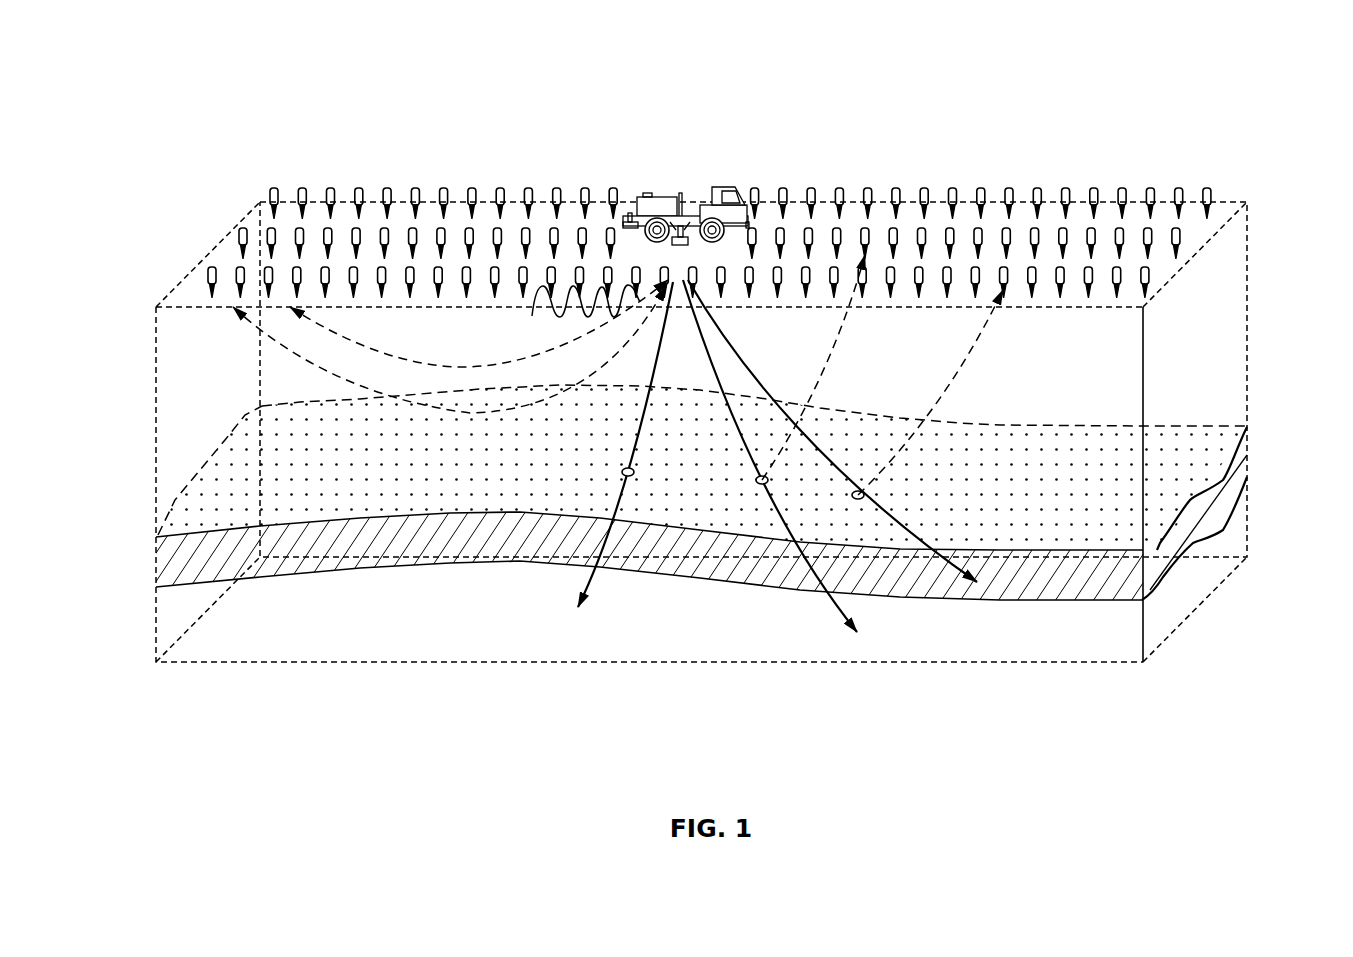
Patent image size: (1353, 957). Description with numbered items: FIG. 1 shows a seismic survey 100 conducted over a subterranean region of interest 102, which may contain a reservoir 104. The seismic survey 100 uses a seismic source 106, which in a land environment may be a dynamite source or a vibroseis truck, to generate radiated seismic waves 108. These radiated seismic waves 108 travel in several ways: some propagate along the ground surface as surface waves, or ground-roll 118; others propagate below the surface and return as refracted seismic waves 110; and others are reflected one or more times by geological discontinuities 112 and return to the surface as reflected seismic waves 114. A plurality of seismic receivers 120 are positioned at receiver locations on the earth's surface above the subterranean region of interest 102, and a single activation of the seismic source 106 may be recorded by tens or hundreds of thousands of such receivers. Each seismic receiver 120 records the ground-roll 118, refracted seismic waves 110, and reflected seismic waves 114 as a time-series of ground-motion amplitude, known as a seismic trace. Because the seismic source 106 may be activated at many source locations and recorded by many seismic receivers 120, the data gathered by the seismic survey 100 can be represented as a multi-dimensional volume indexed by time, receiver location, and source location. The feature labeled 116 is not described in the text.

The seismic survey 100 is at (1252, 112).
The subterranean region of interest 102 is at (1083, 633).
The reservoir 104 is at (167, 563).
The seismic source 106 is at (655, 192).
The radiated seismic waves 108 is at (593, 577).
The refracted seismic waves 110 is at (353, 343).
The geological discontinuities 112 is at (1160, 582).
The reflected seismic waves 114 is at (853, 315).
The survey area 116 is at (200, 262).
The surface waves (ground-roll) 118 is at (514, 308).
The seismic receiver 120 is at (1123, 187).